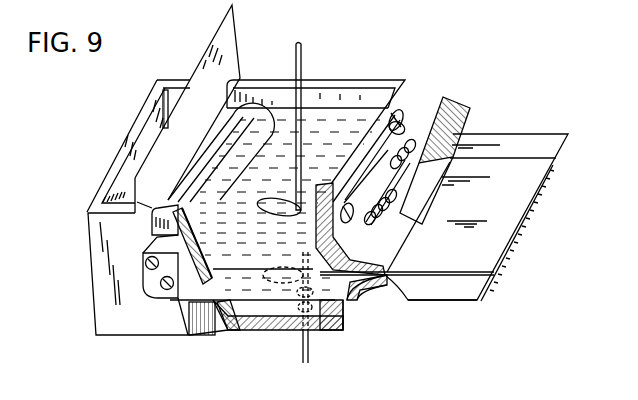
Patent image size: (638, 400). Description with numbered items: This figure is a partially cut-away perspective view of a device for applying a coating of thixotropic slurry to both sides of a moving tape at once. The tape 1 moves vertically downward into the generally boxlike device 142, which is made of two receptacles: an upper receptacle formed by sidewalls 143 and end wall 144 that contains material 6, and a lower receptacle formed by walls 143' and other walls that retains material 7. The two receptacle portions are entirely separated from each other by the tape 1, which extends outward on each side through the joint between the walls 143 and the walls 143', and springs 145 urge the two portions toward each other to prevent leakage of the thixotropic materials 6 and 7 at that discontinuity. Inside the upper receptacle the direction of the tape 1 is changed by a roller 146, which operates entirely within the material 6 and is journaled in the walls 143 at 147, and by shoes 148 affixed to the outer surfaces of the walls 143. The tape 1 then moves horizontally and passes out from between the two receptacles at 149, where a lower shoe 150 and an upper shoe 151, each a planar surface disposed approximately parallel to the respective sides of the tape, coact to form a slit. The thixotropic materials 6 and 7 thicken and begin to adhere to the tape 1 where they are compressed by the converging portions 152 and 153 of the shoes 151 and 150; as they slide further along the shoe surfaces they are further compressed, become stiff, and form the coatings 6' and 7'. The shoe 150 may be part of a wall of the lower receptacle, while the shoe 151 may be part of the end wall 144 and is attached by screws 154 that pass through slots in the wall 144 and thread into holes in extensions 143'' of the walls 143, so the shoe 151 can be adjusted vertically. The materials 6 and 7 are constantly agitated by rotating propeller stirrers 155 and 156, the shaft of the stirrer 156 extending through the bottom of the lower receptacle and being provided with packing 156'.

The tape 1 is at (230, 37).
The material 6 is at (290, 173).
The coating 6' is at (519, 222).
The material 7 is at (98, 176).
The coating 7' is at (444, 217).
The boxlike device 142 is at (125, 125).
The sidewalls 143 is at (287, 193).
The walls 143' is at (110, 274).
The extensions of walls 143'' is at (380, 119).
The end wall 144 is at (398, 110).
The springs 145 is at (425, 120).
The roller 146 is at (232, 210).
The journal 147 is at (182, 293).
The shoes 148 is at (163, 287).
The exit location 149 is at (394, 303).
The lower shoe 150 is at (370, 290).
The upper shoe 151 is at (385, 265).
The converging portion 152 is at (405, 223).
The converging portion 153 is at (347, 302).
The screws 154 is at (400, 127).
The propeller stirrer 155 is at (293, 45).
The propeller stirrer 156 is at (327, 320).
The packing 156' is at (279, 316).